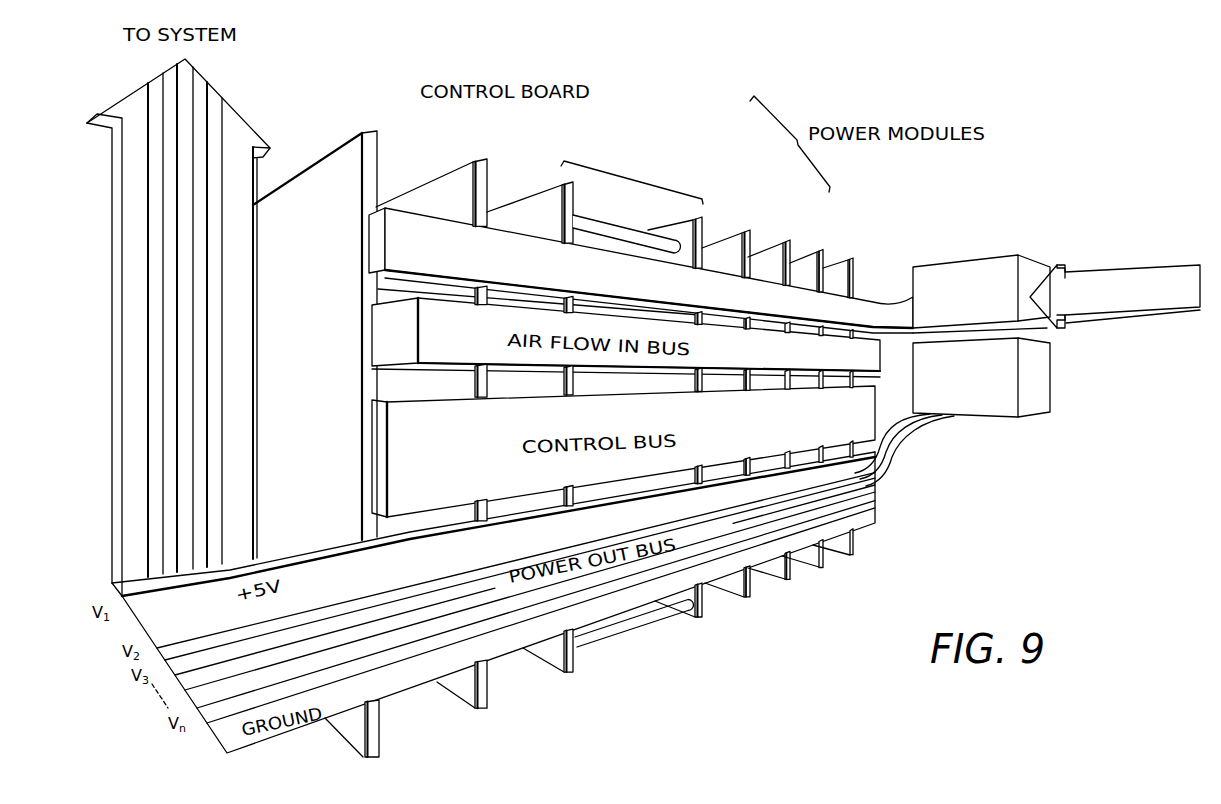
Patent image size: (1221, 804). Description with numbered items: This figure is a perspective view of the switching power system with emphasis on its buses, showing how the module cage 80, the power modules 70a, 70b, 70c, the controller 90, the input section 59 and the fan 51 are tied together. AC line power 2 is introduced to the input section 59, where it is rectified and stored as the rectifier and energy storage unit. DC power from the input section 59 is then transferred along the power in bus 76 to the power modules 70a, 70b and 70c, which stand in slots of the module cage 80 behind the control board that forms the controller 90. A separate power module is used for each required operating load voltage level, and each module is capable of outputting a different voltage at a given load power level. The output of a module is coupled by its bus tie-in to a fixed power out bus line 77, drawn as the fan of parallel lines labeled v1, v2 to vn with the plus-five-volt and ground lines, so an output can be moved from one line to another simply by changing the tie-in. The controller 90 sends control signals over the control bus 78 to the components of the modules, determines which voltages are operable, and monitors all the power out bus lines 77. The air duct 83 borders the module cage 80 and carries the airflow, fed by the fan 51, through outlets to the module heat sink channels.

The line power 2 is at (1157, 270).
The fan 51 is at (1008, 410).
The input section 59 is at (1028, 265).
The power module 70a is at (765, 245).
The power module 70b is at (722, 233).
The power module 70c is at (638, 178).
The power in bus 76 is at (880, 303).
The power out bus line 77 is at (888, 477).
The control bus 78 is at (895, 432).
The module cage 80 is at (311, 170).
The air duct 83 is at (872, 418).
The controller 90 is at (379, 134).